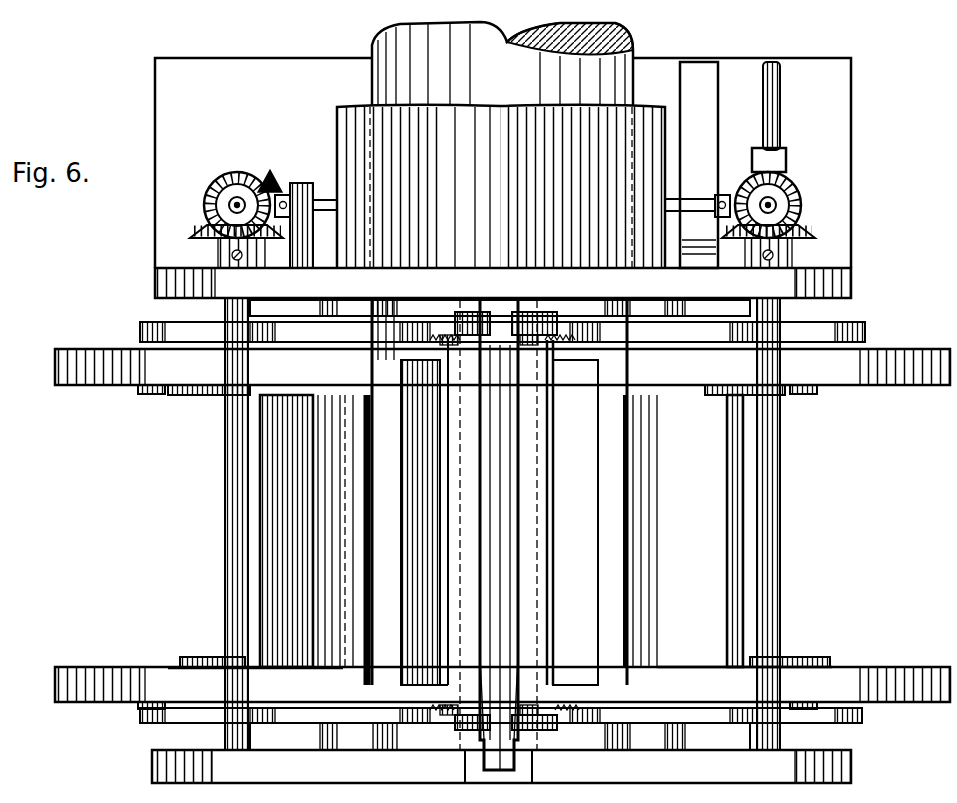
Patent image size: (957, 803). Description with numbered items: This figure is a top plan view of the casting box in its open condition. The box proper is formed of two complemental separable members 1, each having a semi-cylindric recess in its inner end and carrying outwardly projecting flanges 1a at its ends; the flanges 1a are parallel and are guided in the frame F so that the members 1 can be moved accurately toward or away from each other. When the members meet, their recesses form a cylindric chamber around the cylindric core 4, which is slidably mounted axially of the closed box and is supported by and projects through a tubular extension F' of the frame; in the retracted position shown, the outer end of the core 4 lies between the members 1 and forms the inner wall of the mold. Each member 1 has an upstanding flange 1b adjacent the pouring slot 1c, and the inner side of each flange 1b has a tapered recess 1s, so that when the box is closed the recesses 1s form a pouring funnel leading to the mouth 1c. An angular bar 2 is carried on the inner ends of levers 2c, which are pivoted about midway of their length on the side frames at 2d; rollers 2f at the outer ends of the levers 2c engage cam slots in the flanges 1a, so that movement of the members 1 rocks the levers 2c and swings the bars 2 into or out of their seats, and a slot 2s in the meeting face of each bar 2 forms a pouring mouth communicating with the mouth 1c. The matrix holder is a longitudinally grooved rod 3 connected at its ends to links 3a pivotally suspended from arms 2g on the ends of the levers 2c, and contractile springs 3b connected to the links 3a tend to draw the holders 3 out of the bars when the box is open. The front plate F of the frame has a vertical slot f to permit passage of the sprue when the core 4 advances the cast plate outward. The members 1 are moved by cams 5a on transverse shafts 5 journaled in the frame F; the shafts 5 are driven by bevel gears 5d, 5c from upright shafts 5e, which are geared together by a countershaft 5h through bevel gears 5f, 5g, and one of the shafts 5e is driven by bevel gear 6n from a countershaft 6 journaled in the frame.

The box member 1 is at (282, 518).
The flange 1a is at (217, 388).
The upstanding flange 1b is at (358, 500).
The mouth or slot 1c is at (560, 594).
The tapered recess 1s is at (412, 458).
The bar 2 is at (526, 470).
The lever 2c is at (155, 324).
The lever pivot 2d is at (698, 302).
The roller 2f is at (156, 395).
The arm 2g is at (520, 338).
The slot 2s is at (516, 652).
The matrix holder 3 is at (452, 522).
The link 3a is at (476, 311).
The contractile spring 3b is at (455, 345).
The core 4 is at (393, 58).
The transverse shaft 5 is at (225, 313).
The cam 5a is at (183, 395).
The bevel gear 5c is at (206, 238).
The bevel gear 5d is at (222, 206).
The upright shaft 5e is at (232, 203).
The bevel gear 5f is at (733, 192).
The bevel gear 5g is at (272, 178).
The countershaft 5h is at (322, 198).
The countershaft 6 is at (780, 100).
The bevel gear 6n is at (790, 168).
The frame F is at (496, 424).
The tubular extension F' is at (693, 165).
The vertical slot f is at (498, 735).